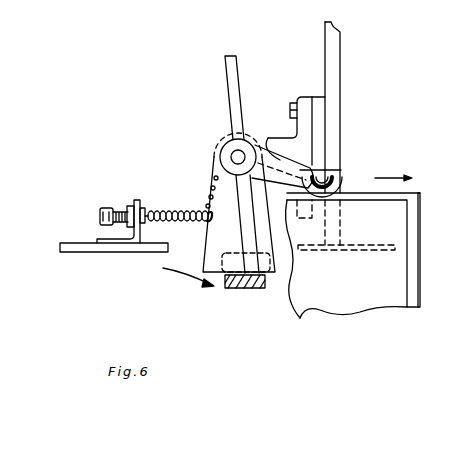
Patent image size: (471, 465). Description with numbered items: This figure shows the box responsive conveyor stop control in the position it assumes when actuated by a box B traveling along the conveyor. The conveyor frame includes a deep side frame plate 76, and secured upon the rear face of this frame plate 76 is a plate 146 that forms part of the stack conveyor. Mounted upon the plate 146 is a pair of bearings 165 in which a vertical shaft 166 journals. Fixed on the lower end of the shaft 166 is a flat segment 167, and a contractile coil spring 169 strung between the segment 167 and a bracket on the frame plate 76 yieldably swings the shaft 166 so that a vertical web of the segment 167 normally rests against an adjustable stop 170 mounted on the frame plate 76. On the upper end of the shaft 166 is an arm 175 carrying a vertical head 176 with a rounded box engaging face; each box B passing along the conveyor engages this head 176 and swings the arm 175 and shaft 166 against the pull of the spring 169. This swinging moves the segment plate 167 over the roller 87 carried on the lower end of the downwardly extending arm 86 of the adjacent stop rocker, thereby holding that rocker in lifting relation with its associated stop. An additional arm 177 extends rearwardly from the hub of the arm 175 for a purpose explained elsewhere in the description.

The plate 146 is at (330, 79).
The bearings 165 is at (304, 131).
The vertical shaft 166 is at (237, 157).
The flat segment 167 is at (205, 233).
The contractile coil spring 169 is at (183, 209).
The adjustable stop 170 is at (157, 208).
The arm 175 is at (280, 160).
The vertical head 176 is at (343, 176).
The arm 177 is at (230, 83).
The frame plate 76 is at (97, 253).
The downwardly extending arm 86 is at (247, 288).
The roller 87 is at (230, 253).
The carton B is at (411, 223).